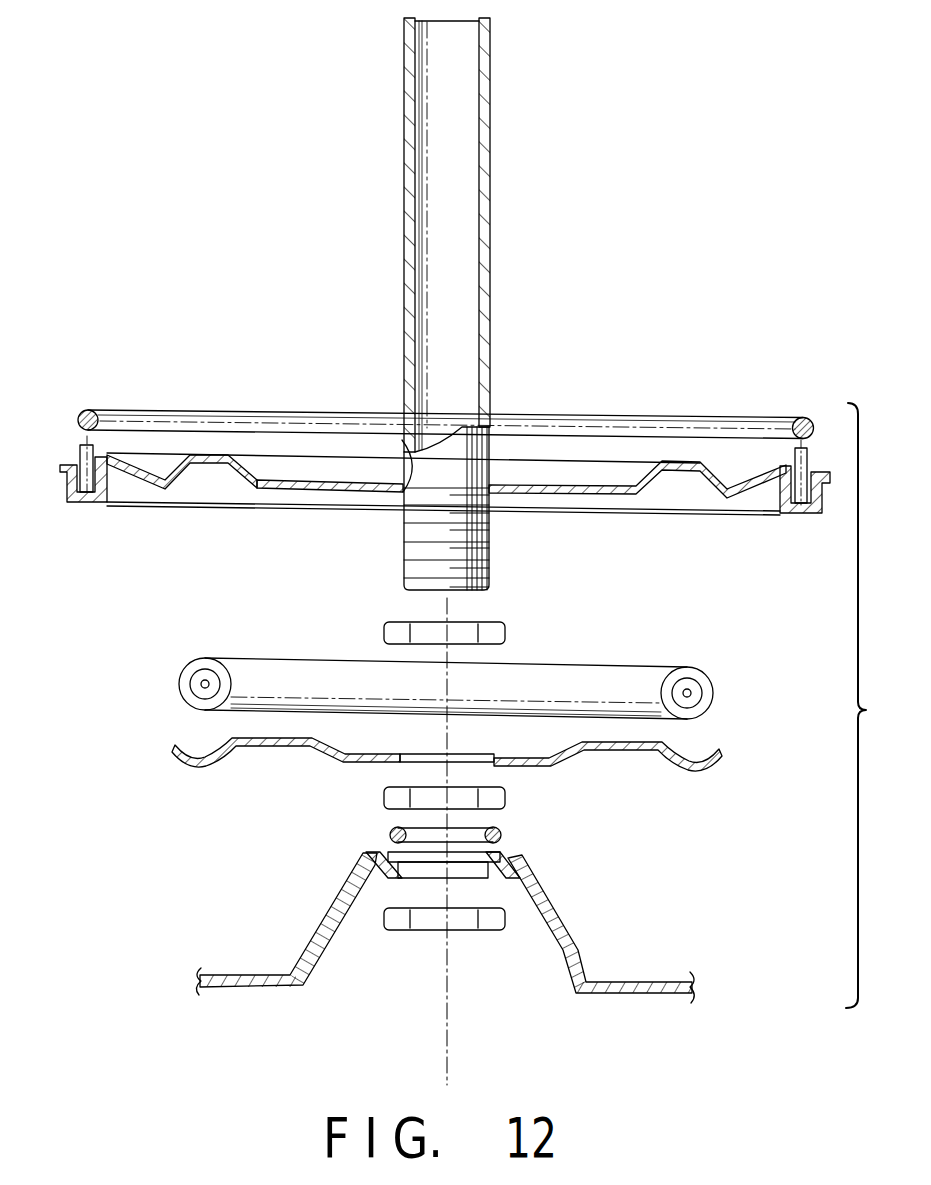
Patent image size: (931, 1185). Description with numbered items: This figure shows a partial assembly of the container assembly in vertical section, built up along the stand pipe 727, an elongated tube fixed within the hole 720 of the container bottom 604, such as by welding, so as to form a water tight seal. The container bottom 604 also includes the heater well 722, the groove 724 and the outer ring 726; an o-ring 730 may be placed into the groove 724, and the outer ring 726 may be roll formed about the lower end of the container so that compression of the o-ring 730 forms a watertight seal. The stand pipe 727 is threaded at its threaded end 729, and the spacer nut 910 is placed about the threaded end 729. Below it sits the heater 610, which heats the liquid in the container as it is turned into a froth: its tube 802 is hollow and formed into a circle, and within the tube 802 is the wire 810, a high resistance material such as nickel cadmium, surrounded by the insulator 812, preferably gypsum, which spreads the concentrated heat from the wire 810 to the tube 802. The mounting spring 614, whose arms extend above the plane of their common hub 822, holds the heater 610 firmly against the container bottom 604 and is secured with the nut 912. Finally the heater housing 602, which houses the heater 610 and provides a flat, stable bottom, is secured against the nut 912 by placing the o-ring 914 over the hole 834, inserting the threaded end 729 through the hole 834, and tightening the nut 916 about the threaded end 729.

The stand pipe 727 is at (490, 313).
The threaded end 729 is at (489, 565).
The hole 720 is at (402, 440).
The o-ring 730 is at (88, 409).
The groove 724 is at (83, 455).
The outer ring 726 is at (60, 470).
The container bottom 604 is at (583, 487).
The heater well 722 is at (207, 467).
The heater 610 is at (305, 658).
The tube 802 is at (700, 714).
The wire 810 is at (203, 683).
The insulator 812 is at (693, 683).
The spacer nut 910 is at (506, 632).
The mounting spring 614 is at (327, 756).
The common hub 822 is at (370, 763).
The nut 912 is at (506, 797).
The o-ring 914 is at (500, 832).
The hole 834 is at (500, 853).
The heater housing 602 is at (576, 950).
The nut 916 is at (490, 924).